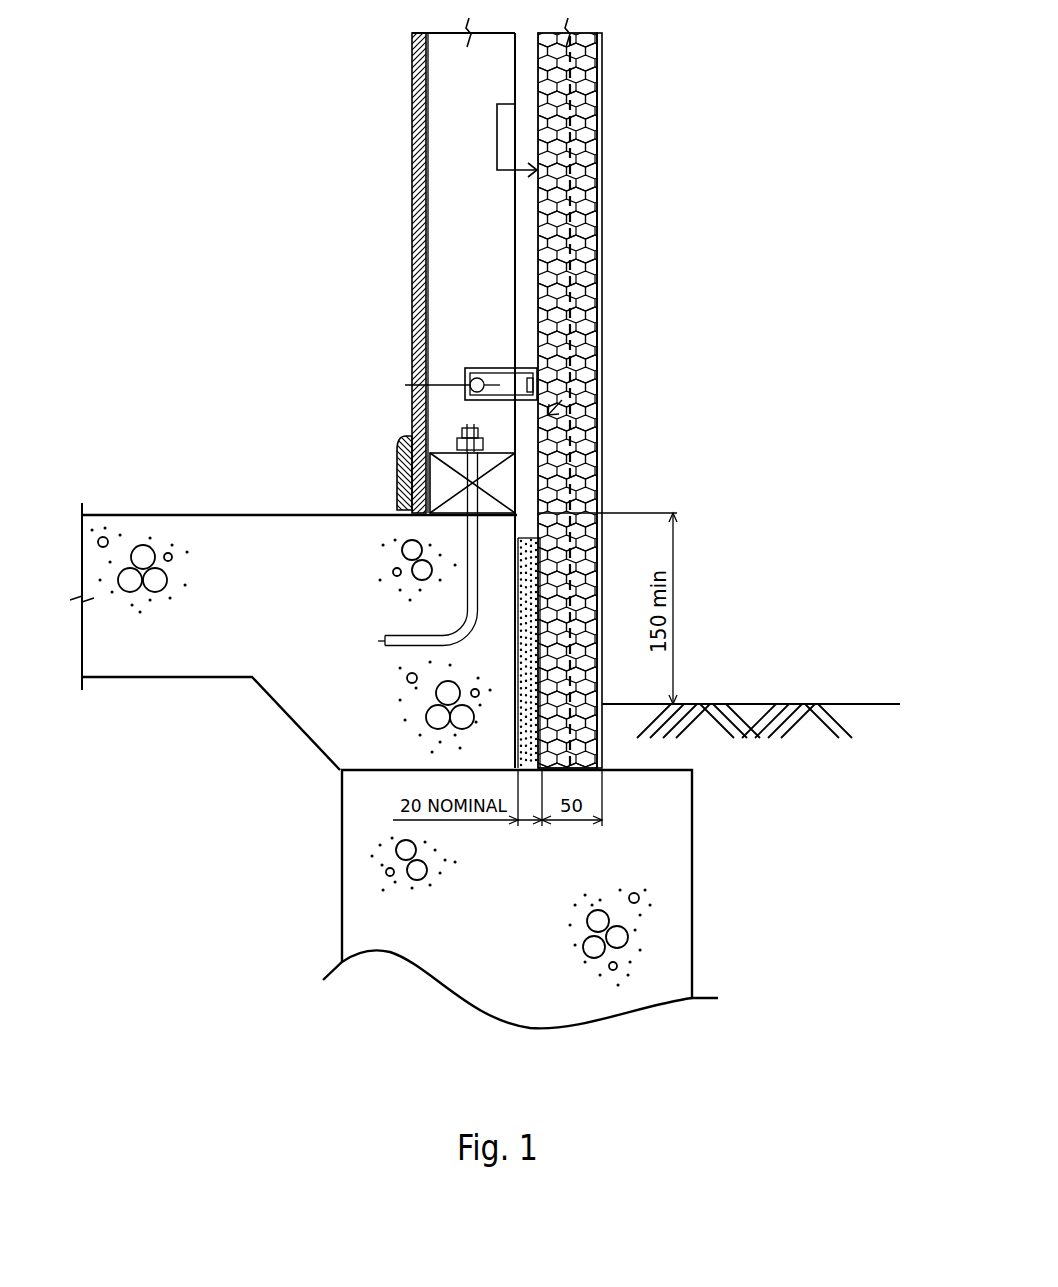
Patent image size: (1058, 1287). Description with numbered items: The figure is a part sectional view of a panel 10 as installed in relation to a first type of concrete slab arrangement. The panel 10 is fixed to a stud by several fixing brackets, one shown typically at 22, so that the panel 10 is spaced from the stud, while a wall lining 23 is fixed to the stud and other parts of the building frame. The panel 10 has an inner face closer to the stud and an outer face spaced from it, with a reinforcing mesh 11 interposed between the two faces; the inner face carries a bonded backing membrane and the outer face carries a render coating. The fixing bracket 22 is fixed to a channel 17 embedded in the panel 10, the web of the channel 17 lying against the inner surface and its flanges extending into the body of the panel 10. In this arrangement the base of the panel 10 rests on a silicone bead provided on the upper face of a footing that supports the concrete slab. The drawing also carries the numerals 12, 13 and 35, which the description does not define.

The panel 10 is at (583, 247).
The reinforcing mesh 11 is at (572, 170).
The upper bracket 12 is at (497, 104).
The render coating 13 is at (603, 323).
The channel 17 is at (603, 445).
The fixing bracket 22 is at (462, 373).
The wall lining 23 is at (411, 205).
The gravel drainage strip 35 is at (522, 555).